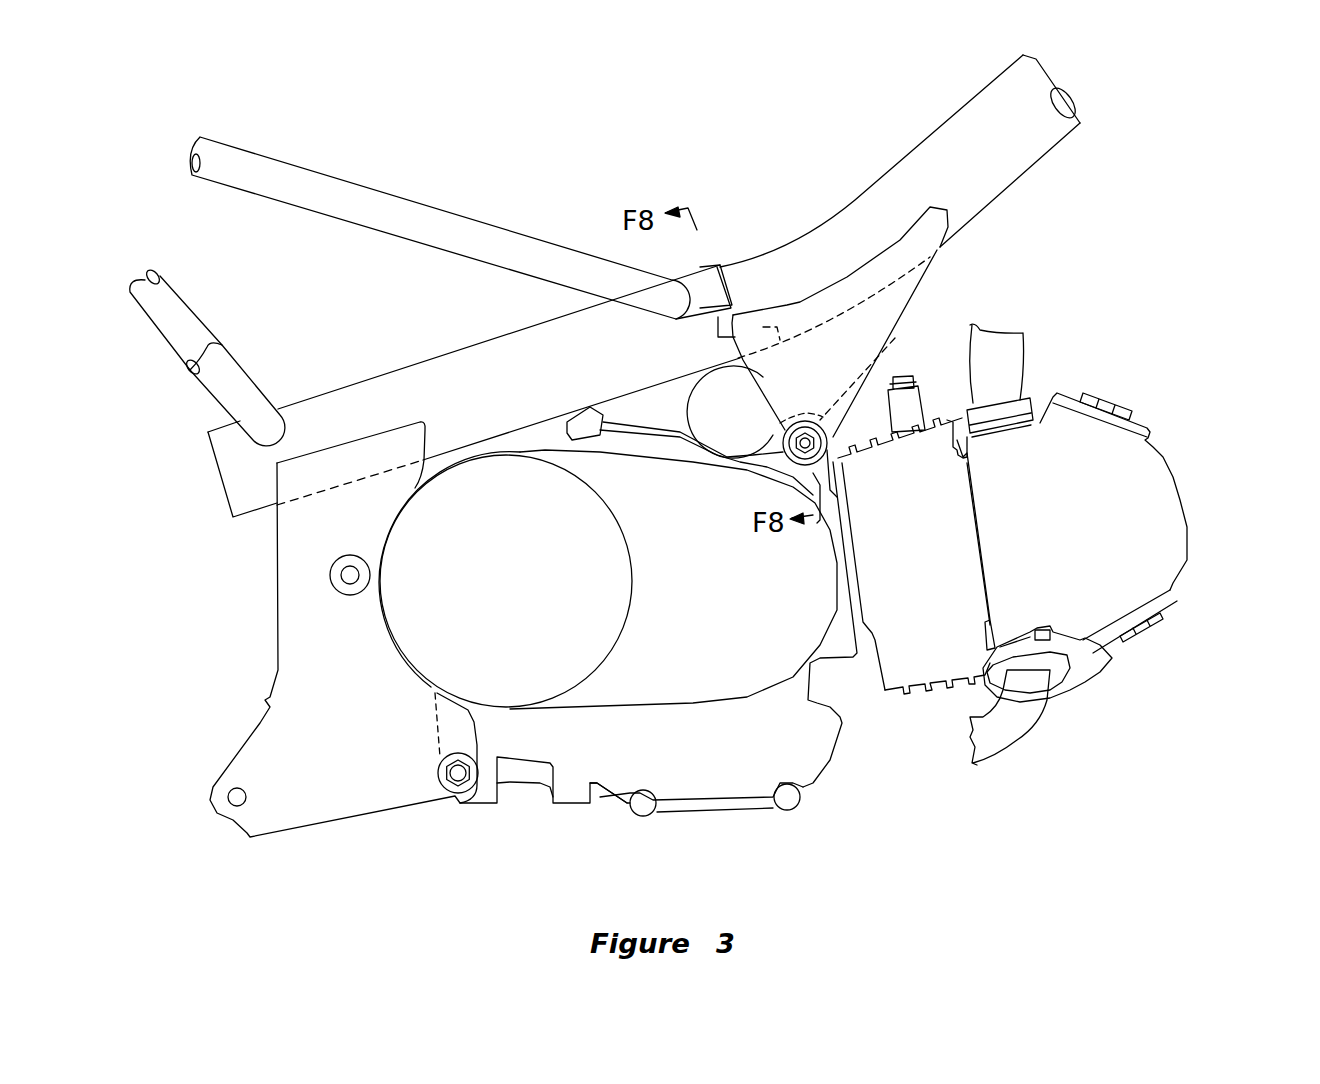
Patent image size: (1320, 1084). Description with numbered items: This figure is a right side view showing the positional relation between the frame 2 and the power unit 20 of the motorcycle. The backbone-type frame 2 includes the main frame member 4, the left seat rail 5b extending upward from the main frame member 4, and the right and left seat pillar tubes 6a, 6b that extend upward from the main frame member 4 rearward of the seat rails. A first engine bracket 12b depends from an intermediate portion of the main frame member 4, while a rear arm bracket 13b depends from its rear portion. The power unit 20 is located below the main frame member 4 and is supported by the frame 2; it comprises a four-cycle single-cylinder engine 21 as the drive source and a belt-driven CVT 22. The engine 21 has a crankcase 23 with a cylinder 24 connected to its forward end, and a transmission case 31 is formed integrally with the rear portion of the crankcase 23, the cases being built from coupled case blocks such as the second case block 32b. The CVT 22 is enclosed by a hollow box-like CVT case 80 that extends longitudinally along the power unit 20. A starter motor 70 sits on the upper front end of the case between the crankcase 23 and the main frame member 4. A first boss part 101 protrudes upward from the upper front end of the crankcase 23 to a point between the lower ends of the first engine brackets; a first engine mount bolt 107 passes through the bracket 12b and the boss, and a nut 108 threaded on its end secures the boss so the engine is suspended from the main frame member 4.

The frame 2 is at (926, 124).
The left seat rail 5b is at (420, 212).
The right seat pillar tube 6a is at (167, 300).
The left seat pillar tube 6b is at (233, 378).
The main frame member 4 is at (438, 368).
The first engine bracket 12b is at (903, 300).
The first boss part 101 is at (880, 352).
The first engine mount bolt 107 is at (806, 440).
The nut 108 is at (826, 446).
The starter motor 70 is at (717, 420).
The power unit 20 is at (1108, 380).
The engine 21 is at (1165, 527).
The rear arm bracket 13b is at (294, 657).
The CVT case 80 is at (432, 660).
The CVT 22 is at (697, 678).
The cylinder 24 is at (925, 660).
The crankcase 23 is at (833, 758).
The transmission case 31 is at (511, 731).
The second case block 32b is at (622, 760).